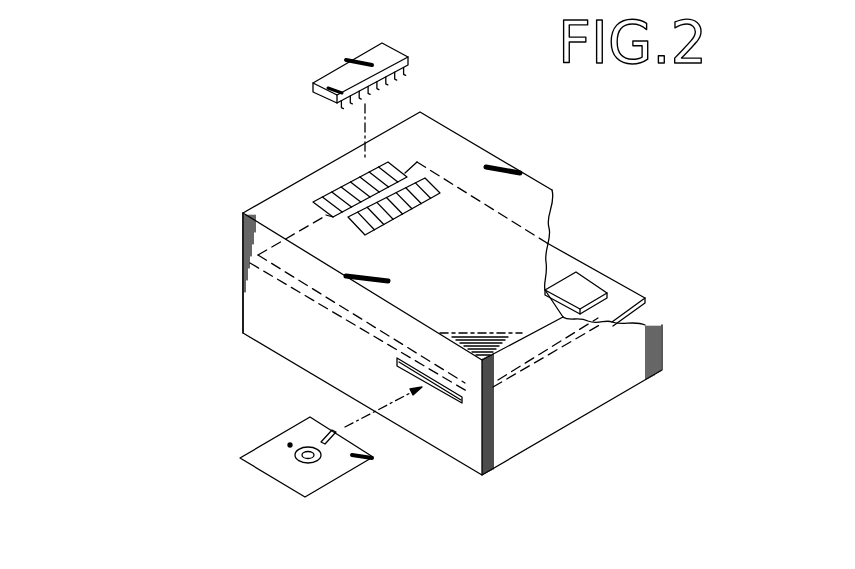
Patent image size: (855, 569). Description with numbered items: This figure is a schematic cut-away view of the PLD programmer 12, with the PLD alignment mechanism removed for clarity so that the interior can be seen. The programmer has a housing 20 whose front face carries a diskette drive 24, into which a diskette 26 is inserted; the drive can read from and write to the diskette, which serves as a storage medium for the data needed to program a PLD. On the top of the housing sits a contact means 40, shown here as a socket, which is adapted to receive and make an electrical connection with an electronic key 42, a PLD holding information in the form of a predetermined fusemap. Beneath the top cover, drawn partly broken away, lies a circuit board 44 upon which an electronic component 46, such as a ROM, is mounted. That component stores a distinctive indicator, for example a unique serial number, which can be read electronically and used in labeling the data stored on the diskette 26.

The PLD programmer 12 is at (665, 377).
The housing 20 is at (243, 275).
The diskette drive 24 is at (462, 403).
The diskette 26 is at (330, 463).
The contact means 40 is at (395, 158).
The electronic key 42 is at (385, 54).
The circuit board 44 is at (627, 288).
The electronic component 46 is at (577, 277).